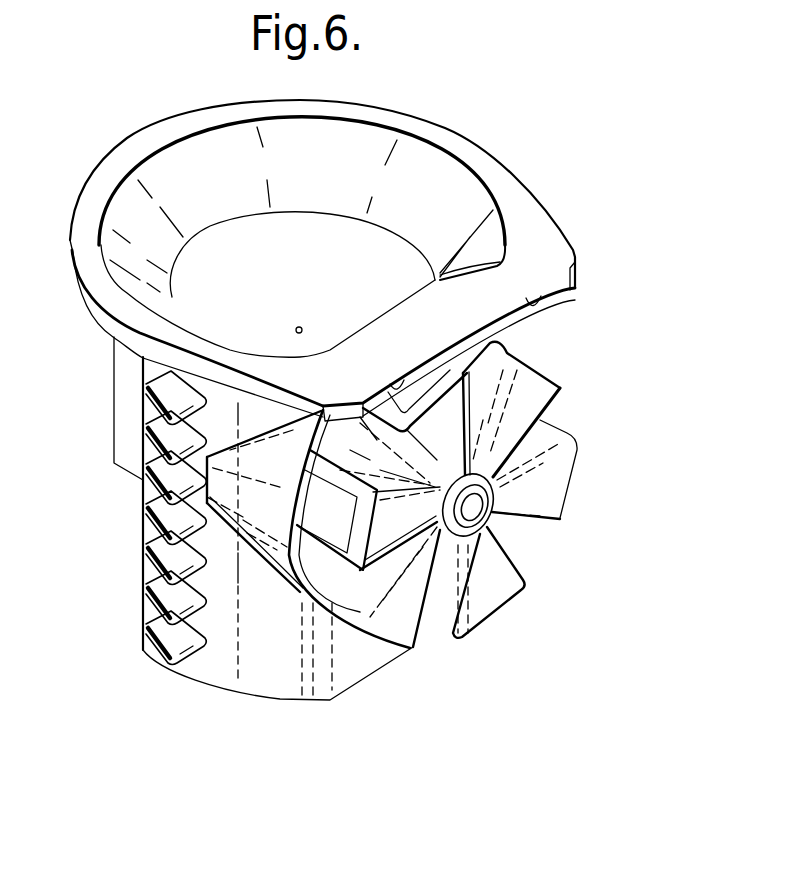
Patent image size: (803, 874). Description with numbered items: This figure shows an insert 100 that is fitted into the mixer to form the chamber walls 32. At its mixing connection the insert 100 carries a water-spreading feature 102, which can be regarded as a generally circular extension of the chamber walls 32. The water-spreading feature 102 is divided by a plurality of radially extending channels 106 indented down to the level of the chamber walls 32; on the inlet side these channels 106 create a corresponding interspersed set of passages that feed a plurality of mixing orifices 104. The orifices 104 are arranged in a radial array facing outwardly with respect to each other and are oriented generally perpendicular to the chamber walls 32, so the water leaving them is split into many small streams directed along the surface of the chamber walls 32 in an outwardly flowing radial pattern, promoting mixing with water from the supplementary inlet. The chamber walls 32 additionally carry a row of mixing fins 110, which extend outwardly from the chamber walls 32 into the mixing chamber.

The insert 100 is at (477, 118).
The water-spreading feature 102 is at (592, 390).
The mixing orifices 104 is at (320, 523).
The channels 106 is at (541, 437).
The mixing fins 110 is at (143, 538).
The chamber walls 32 is at (143, 610).